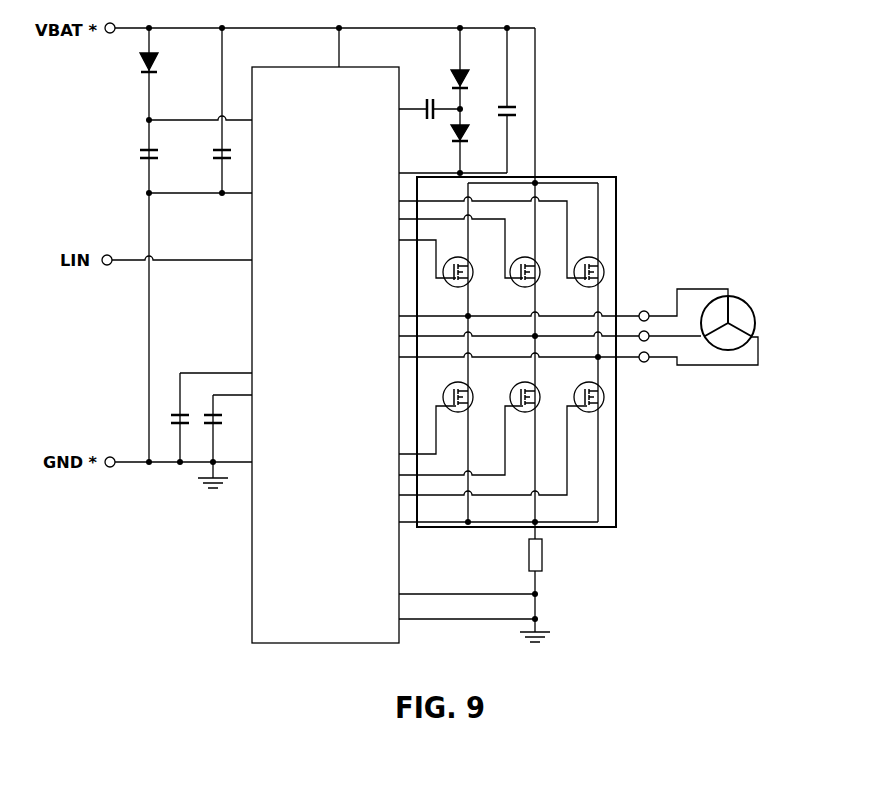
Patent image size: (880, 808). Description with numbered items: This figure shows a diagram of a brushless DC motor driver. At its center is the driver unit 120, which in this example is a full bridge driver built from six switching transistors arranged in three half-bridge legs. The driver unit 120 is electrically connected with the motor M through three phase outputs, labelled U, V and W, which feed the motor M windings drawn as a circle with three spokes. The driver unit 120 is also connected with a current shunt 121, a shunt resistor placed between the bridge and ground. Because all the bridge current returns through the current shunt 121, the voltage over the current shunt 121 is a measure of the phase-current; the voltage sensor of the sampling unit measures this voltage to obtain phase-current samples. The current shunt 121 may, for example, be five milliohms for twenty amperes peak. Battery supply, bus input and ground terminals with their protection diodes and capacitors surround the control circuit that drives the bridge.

The driver unit 120 is at (617, 213).
The current shunt 121 is at (543, 558).
The motor M is at (728, 303).
The phase U terminal U is at (650, 310).
The phase V terminal V is at (650, 330).
The phase W terminal W is at (651, 351).